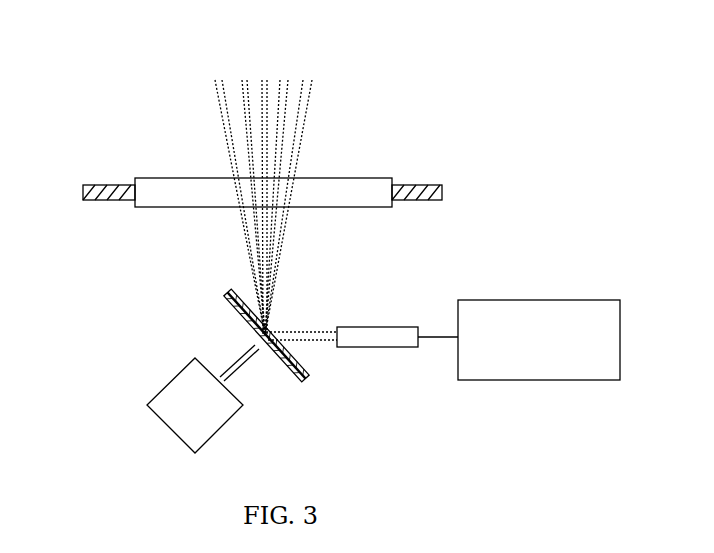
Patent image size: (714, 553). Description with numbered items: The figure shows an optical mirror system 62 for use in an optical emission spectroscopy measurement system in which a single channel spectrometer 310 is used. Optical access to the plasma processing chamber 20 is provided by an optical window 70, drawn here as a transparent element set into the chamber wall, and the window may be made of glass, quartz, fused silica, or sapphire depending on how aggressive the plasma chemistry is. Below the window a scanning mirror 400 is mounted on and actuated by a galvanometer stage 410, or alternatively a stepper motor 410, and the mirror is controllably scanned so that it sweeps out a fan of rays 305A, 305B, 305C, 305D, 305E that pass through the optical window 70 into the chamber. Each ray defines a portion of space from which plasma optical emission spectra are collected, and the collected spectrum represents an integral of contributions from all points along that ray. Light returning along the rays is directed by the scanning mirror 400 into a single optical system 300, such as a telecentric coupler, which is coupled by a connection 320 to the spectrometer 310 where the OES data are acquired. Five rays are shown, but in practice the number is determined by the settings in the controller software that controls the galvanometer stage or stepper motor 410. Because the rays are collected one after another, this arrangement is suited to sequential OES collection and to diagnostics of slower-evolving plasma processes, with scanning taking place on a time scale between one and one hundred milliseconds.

The plasma processing chamber 20 is at (107, 187).
The optical mirror system 62 is at (85, 135).
The optical window 70 is at (378, 178).
The optical system 300 is at (375, 326).
The ray 305A is at (220, 110).
The ray 305B is at (238, 90).
The ray 305C is at (268, 90).
The ray 305D is at (278, 98).
The ray 305E is at (307, 115).
The single channel spectrometer 310 is at (556, 347).
The optical fiber / connection 320 is at (437, 341).
The scanning mirror 400 is at (218, 305).
The galvanometer stage 410 is at (168, 384).